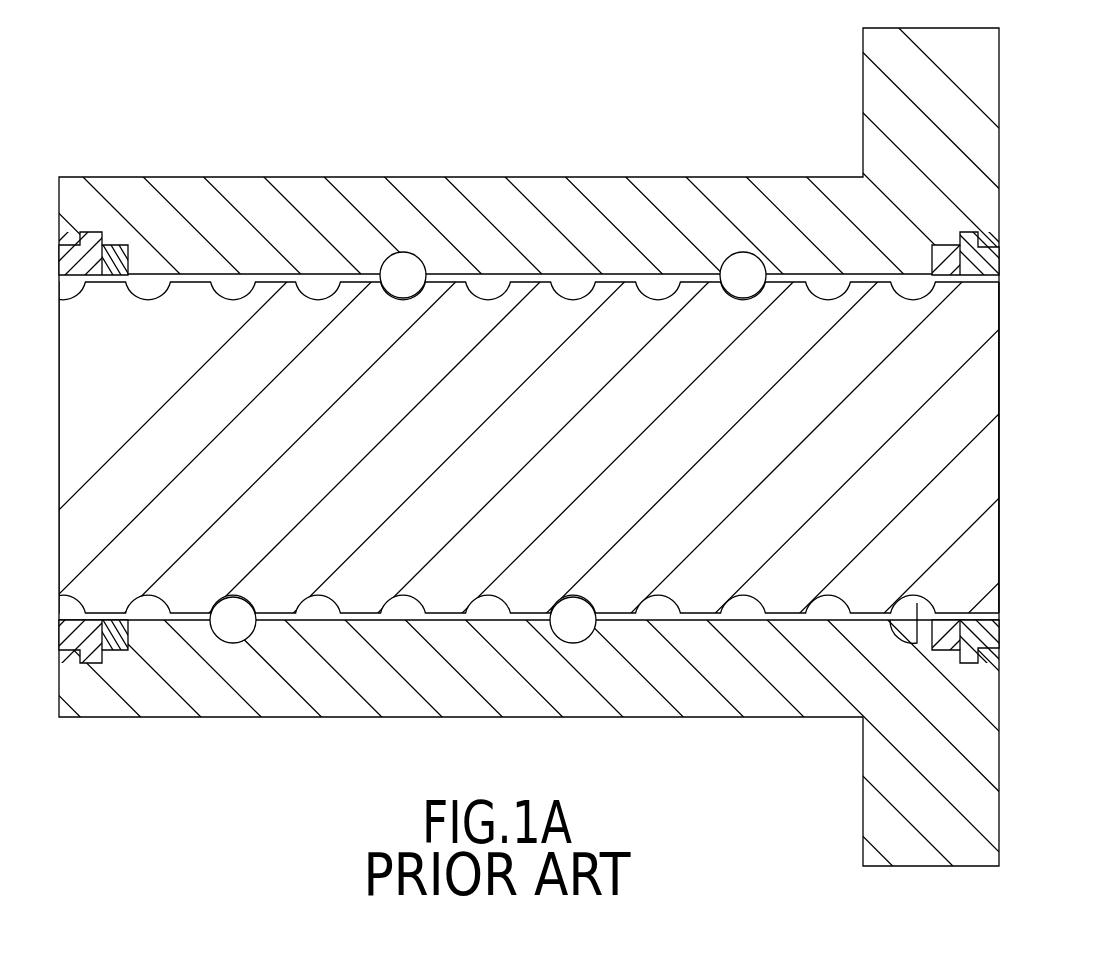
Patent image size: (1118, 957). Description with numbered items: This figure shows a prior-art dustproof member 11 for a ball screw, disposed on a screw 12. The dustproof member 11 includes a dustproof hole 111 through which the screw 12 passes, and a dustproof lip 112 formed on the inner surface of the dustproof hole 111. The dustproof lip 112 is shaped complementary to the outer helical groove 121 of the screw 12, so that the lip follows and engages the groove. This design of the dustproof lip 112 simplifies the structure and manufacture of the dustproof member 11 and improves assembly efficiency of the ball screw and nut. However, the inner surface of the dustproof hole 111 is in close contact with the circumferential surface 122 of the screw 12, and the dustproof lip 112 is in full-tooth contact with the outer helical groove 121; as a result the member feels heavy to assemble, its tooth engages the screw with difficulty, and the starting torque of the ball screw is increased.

The dustproof member 11 is at (999, 480).
The dustproof hole 111 is at (968, 283).
The dustproof lip 112 is at (999, 279).
The screw 12 is at (1000, 257).
The outer helical groove 121 is at (998, 296).
The circumferential surface 122 is at (947, 277).